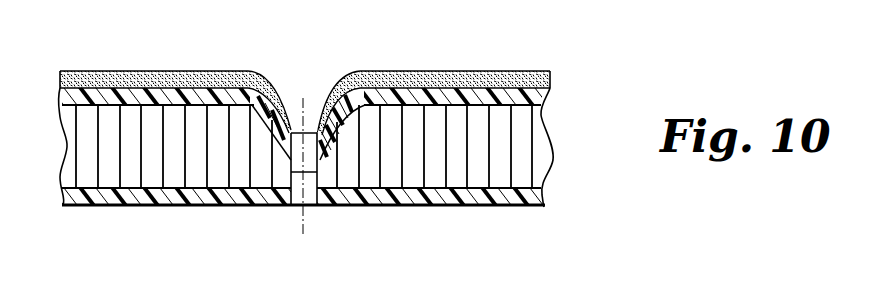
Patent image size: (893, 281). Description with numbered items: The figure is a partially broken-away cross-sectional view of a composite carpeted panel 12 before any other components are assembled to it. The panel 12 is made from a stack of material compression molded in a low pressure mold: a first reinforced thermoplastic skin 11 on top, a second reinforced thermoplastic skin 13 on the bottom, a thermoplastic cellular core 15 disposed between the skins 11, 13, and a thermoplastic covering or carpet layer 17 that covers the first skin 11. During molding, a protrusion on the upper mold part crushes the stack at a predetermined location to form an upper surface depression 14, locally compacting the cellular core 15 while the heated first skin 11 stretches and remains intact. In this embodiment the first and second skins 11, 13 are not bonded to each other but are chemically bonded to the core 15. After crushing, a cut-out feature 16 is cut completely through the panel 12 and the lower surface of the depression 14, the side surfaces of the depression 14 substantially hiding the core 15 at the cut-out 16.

The covering or carpet layer 17 is at (552, 84).
The first reinforced thermoplastic skin 11 is at (549, 96).
The panel 12 is at (549, 121).
The thermoplastic cellular core 15 is at (553, 158).
The second reinforced thermoplastic skin 13 is at (547, 203).
The cut-out feature 16 is at (311, 153).
The upper surface depression 14 is at (323, 98).